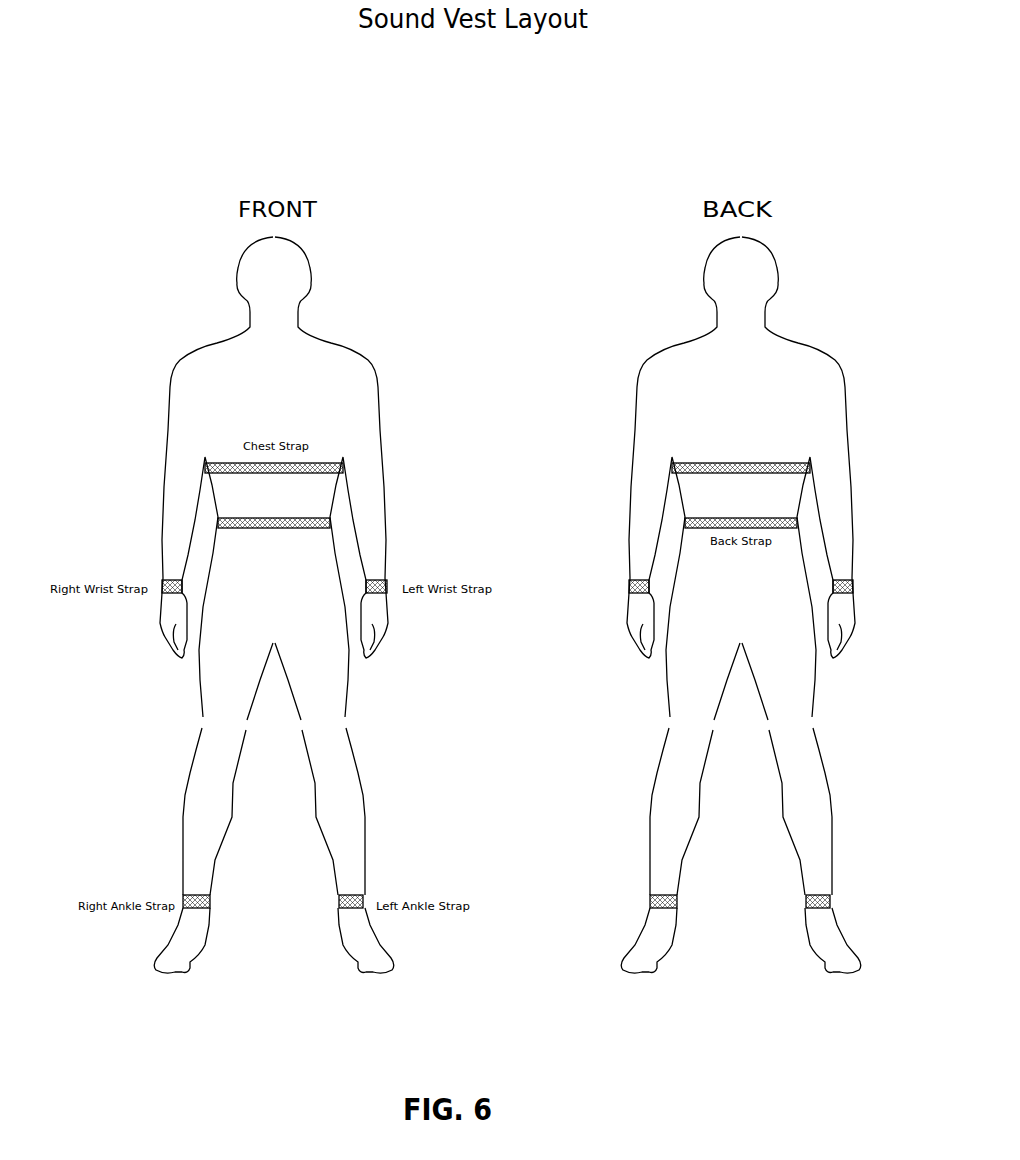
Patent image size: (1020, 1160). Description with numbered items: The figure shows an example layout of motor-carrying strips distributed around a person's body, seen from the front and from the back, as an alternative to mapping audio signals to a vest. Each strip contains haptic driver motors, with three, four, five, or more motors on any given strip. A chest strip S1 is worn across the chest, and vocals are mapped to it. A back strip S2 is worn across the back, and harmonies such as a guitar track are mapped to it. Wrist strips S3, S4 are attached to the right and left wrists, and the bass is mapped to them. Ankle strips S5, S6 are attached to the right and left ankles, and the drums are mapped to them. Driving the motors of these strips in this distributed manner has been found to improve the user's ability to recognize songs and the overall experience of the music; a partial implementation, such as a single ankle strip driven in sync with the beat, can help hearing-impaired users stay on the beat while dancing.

The chest strip S1 is at (346, 463).
The back strip S2 is at (684, 518).
The wrist strip S3 is at (162, 579).
The wrist strip S4 is at (388, 580).
The ankle strip S5 is at (183, 896).
The ankle strip S6 is at (362, 895).